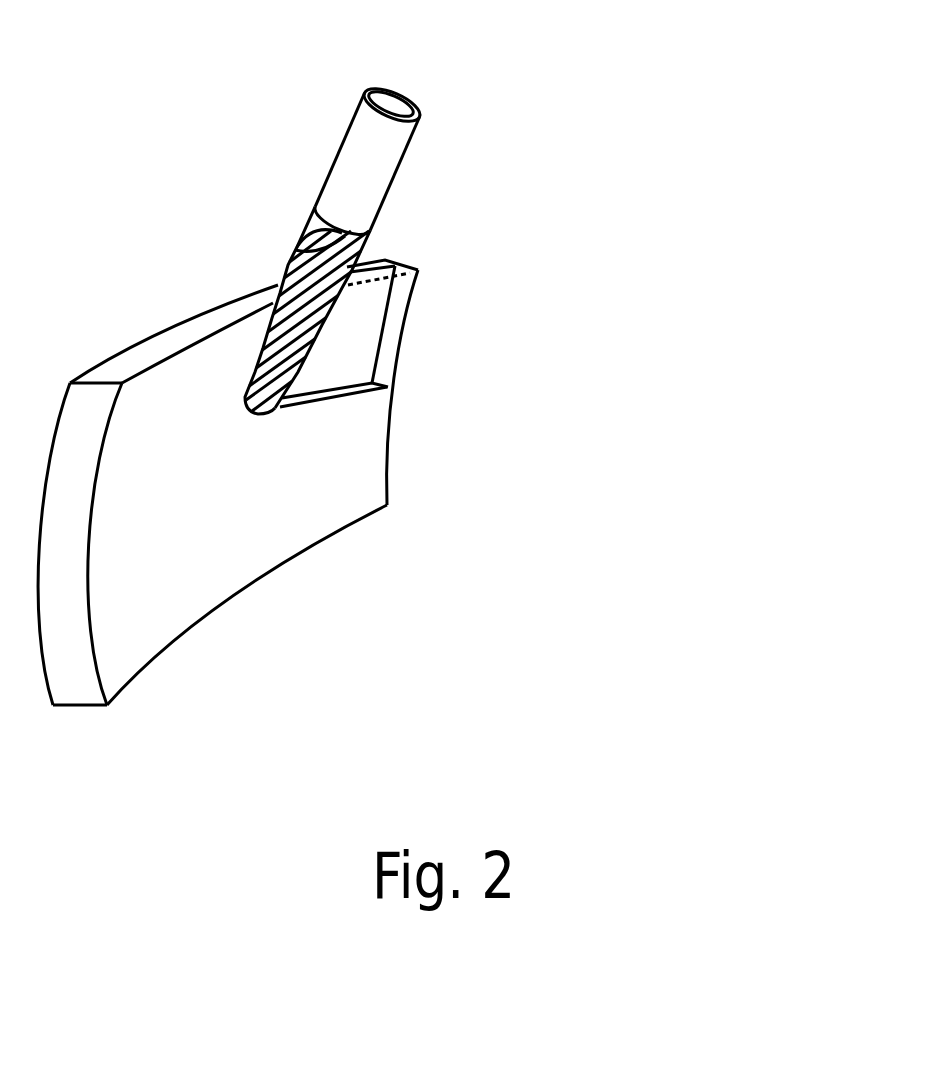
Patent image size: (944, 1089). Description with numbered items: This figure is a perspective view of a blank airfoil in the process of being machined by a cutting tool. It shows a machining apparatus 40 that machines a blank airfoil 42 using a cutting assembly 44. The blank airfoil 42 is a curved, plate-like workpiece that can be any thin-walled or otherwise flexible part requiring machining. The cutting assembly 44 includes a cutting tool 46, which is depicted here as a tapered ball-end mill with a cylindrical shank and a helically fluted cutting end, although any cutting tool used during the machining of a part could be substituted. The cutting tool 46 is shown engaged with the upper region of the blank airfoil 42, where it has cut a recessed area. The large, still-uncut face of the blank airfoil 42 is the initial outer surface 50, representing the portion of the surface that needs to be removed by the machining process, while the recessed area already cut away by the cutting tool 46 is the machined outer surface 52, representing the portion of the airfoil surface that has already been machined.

The machining apparatus 40 is at (399, 464).
The blank airfoil 42 is at (298, 482).
The cutting assembly 44 is at (414, 219).
The cutting tool 46 is at (402, 160).
The initial outer surface 50 is at (362, 481).
The machined outer surface 52 is at (350, 352).